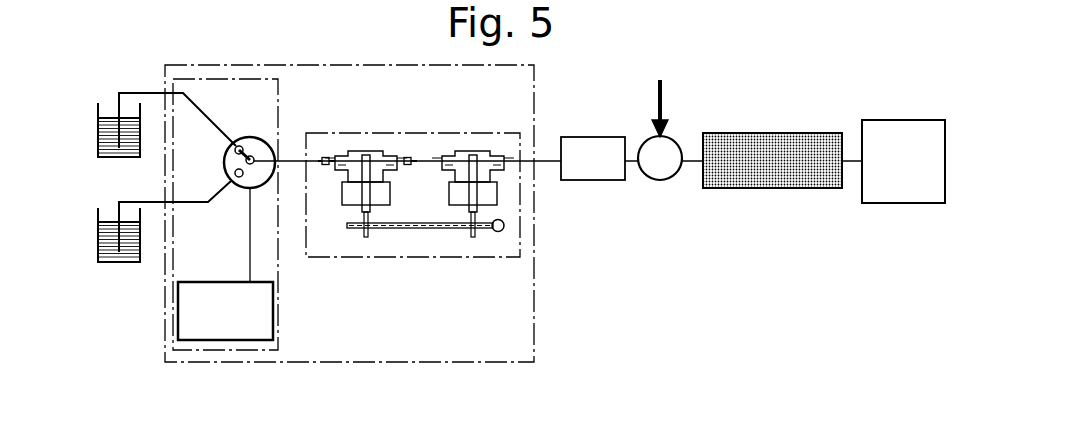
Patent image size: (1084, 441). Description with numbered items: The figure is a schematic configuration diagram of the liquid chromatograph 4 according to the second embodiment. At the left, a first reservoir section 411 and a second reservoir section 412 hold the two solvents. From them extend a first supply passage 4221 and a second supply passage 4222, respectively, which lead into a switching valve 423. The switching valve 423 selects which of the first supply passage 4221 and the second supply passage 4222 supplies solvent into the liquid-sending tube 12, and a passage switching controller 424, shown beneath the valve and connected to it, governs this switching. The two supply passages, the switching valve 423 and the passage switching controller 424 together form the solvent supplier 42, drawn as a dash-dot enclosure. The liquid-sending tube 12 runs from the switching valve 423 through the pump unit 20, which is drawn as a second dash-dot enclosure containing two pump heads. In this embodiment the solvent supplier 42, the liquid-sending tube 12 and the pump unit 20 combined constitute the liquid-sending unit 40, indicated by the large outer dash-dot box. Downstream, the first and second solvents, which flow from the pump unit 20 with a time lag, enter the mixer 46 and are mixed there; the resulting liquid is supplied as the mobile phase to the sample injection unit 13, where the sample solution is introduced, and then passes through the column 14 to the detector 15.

The liquid chromatograph 4 is at (827, 332).
The liquid-sending tube 12 is at (282, 158).
The sample injection unit 13 is at (670, 170).
The column 14 is at (790, 173).
The detector 15 is at (888, 167).
The pump unit 20 is at (520, 258).
The liquid-sending unit 40 is at (533, 362).
The solvent supplier 42 is at (278, 350).
The mixer 46 is at (600, 168).
The first reservoir section 411 is at (108, 132).
The second reservoir section 412 is at (108, 237).
The first supply passage 4221 is at (205, 113).
The second supply passage 4222 is at (180, 203).
The switching valve 423 is at (260, 174).
The passage switching controller 424 is at (203, 340).